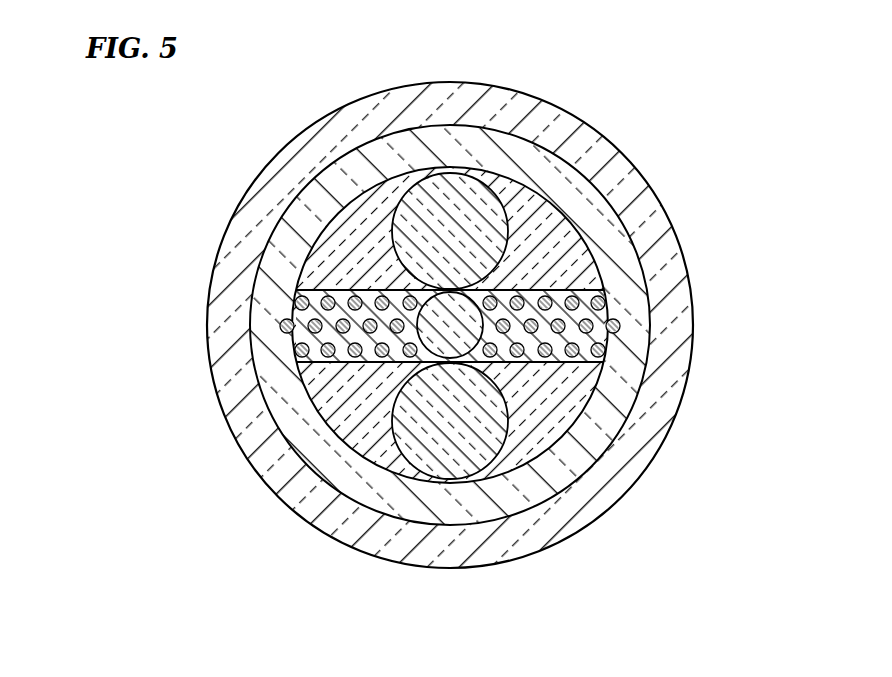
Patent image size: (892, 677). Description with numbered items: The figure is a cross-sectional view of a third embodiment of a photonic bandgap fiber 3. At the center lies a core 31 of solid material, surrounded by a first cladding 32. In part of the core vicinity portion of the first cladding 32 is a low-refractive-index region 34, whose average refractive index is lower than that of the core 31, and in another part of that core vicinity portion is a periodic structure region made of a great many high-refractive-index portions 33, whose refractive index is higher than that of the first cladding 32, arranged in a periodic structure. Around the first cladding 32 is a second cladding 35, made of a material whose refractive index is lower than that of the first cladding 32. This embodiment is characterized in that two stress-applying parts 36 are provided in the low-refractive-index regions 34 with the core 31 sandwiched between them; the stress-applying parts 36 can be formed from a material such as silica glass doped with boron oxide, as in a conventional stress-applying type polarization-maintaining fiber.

The photonic bandgap fiber 3 is at (580, 115).
The core 31 is at (436, 321).
The first cladding 32 is at (603, 213).
The high-refractive-index portions 33 is at (620, 327).
The low-refractive-index region 34 is at (558, 410).
The second cladding 35 is at (280, 185).
The stress-applying parts 36 is at (447, 430).